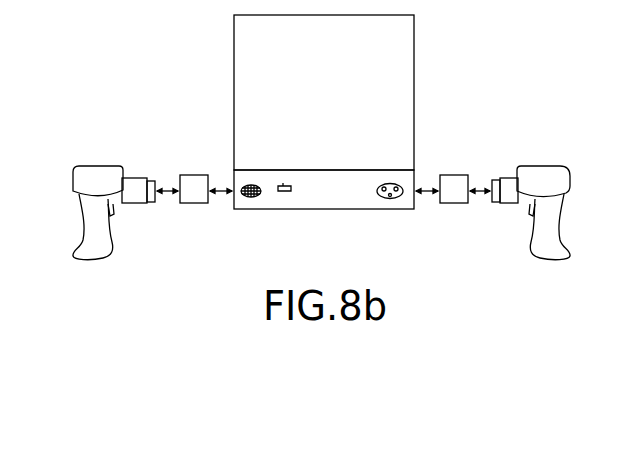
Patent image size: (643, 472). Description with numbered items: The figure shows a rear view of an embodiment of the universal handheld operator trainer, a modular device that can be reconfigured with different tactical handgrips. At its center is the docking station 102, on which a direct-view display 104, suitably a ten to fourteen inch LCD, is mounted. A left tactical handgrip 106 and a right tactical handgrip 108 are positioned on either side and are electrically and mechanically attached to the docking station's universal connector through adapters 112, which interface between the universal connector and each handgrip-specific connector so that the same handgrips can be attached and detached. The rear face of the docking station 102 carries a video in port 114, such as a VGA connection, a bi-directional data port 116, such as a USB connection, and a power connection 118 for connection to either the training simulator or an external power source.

The docking station 102 is at (323, 210).
The direct-view display 104 is at (414, 93).
The left tactical handgrip 106 is at (529, 239).
The right tactical handgrip 108 is at (114, 249).
The adapter 112 is at (194, 175).
The video in port 114 is at (252, 184).
The bi-directional data port 116 is at (283, 184).
The power connection 118 is at (391, 183).